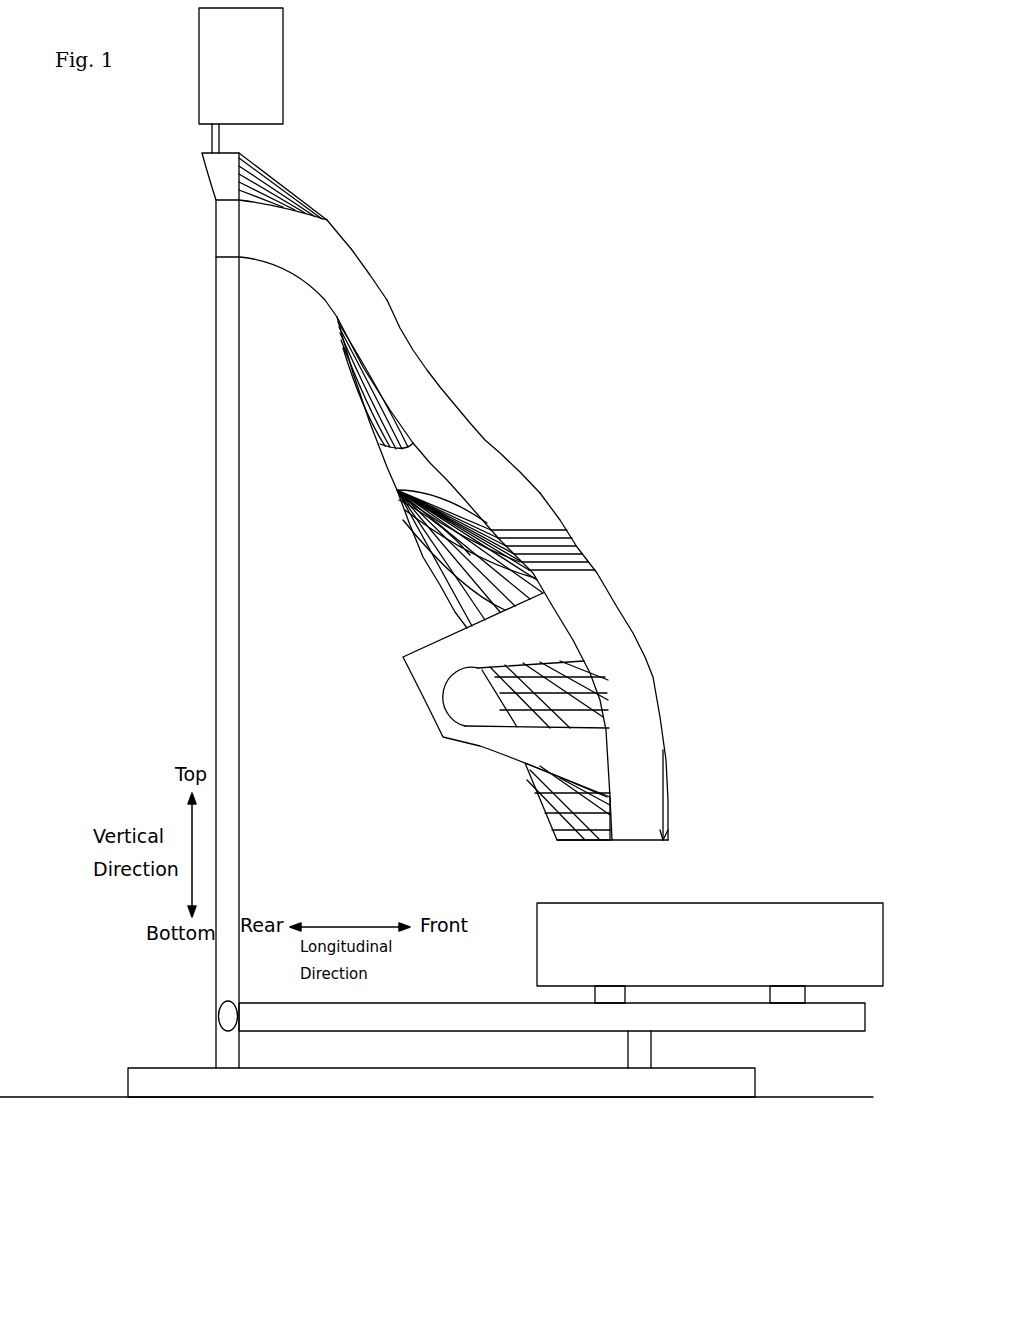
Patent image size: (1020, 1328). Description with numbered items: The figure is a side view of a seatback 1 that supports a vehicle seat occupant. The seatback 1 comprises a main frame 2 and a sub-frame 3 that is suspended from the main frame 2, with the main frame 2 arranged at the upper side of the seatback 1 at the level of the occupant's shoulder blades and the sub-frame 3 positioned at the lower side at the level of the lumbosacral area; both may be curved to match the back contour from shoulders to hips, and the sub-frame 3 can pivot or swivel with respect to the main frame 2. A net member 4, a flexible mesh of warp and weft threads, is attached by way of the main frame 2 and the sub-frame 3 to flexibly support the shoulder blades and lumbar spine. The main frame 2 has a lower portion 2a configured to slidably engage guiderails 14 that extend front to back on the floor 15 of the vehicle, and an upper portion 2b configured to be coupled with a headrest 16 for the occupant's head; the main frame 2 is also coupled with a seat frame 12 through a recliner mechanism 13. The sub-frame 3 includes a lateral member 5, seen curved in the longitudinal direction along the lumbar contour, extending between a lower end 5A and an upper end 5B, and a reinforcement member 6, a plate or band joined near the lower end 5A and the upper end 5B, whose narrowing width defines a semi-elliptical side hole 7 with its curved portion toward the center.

The seatback 1 is at (531, 284).
The main frame 2 is at (367, 278).
The lower portion 2a is at (240, 830).
The upper portion 2b is at (457, 445).
The sub-frame 3 is at (669, 634).
The net member 4 is at (427, 560).
The lateral member 5 is at (613, 613).
The lower end 5A is at (672, 833).
The upper end 5B is at (614, 566).
The reinforcement member 6 is at (430, 657).
The semi-elliptical side hole 7 is at (482, 710).
The seat frame 12 is at (450, 1032).
The recliner mechanism 13 is at (217, 1003).
The guiderails 14 is at (297, 1080).
The floor 15 is at (70, 1097).
The headrest 16 is at (282, 82).